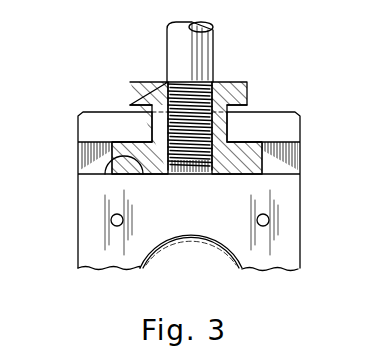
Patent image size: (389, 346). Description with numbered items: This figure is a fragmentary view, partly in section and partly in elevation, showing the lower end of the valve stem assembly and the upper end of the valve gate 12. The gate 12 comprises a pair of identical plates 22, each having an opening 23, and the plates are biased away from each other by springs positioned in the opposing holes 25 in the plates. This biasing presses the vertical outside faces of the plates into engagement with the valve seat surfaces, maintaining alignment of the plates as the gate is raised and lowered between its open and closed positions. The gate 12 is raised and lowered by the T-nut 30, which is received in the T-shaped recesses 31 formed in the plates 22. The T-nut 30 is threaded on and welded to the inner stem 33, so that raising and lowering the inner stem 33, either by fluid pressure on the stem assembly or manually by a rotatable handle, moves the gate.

The gate 12 is at (66, 181).
The plates 22 is at (288, 229).
The opening 23 is at (165, 243).
The holes 25 is at (111, 218).
The T-nut 30 is at (262, 162).
The T-shaped recesses 31 is at (136, 175).
The inner stem 33 is at (214, 57).